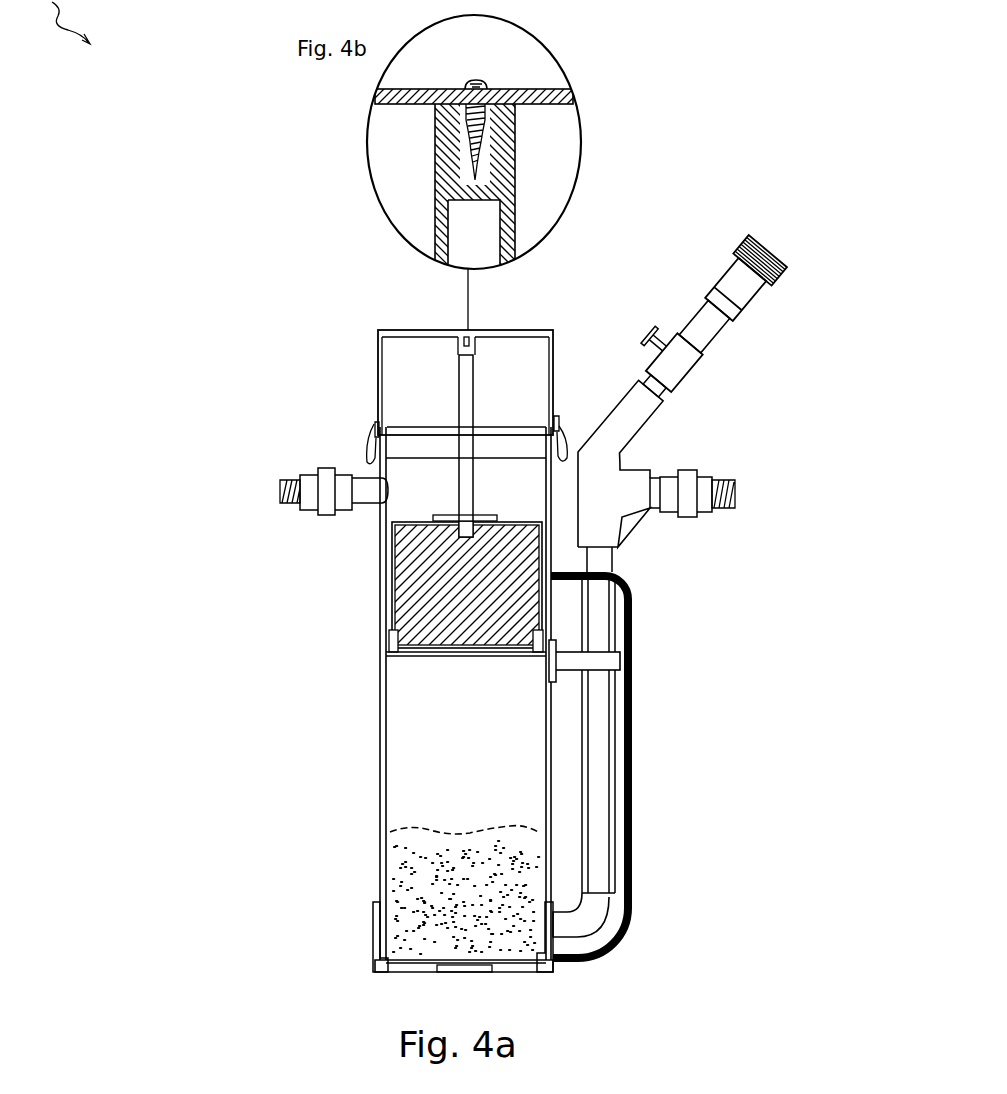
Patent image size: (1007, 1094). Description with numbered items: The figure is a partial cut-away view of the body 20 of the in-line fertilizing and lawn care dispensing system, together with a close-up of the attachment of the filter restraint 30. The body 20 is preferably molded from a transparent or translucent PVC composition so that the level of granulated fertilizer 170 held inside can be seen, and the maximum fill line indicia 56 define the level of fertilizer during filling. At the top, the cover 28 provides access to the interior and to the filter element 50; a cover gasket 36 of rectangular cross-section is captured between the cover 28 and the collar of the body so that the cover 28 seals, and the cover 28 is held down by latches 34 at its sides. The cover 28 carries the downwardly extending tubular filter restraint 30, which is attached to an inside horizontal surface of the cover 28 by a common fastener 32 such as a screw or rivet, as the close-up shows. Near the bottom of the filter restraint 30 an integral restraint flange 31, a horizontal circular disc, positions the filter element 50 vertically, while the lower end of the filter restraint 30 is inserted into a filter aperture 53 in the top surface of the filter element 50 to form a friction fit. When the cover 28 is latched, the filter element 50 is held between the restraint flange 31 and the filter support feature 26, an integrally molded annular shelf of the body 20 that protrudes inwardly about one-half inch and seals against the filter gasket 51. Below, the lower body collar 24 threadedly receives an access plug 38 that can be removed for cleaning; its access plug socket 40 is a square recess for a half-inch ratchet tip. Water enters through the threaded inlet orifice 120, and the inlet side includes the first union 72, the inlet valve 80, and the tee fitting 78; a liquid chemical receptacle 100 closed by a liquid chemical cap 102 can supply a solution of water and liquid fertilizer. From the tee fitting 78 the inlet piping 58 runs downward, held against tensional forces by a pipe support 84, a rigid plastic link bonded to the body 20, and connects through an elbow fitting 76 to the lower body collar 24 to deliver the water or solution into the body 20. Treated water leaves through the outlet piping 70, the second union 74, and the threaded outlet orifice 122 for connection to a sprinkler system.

In FIG. 4A, the body 20 is at (379, 738).
In FIG. 4A, the lower body collar 24 is at (374, 960).
In FIG. 4A, the filter support feature 26 is at (392, 655).
In FIG. 4A, the cover 28 is at (388, 330).
In FIG. 4B, the cover 28 is at (563, 100).
In FIG. 4A, the filter restraint 30 is at (477, 367).
In FIG. 4B, the filter restraint 30 is at (433, 152).
In FIG. 4A, the restraint flange 31 is at (478, 513).
In FIG. 4A, the fastener 32 is at (465, 330).
In FIG. 4B, the fastener 32 is at (487, 82).
In FIG. 4A, the clamp 34 is at (376, 425).
In FIG. 4A, the cover gasket 36 is at (368, 428).
In FIG. 4A, the access plug 38 is at (502, 973).
In FIG. 4A, the access plug socket 40 is at (467, 968).
In FIG. 4A, the filter element 50 is at (430, 597).
In FIG. 4A, the filter gasket 51 is at (528, 645).
In FIG. 4A, the filter aperture 53 is at (455, 527).
In FIG. 4A, the maximum fill line indicia 56 is at (633, 812).
In FIG. 4A, the inlet piping 58 is at (713, 335).
In FIG. 4A, the outlet piping 70 is at (363, 488).
In FIG. 4A, the first union 72 is at (687, 513).
In FIG. 4A, the second union 74 is at (317, 513).
In FIG. 4A, the elbow fitting 76 is at (603, 925).
In FIG. 4A, the tee fitting 78 is at (623, 517).
In FIG. 4A, the inlet valve 80 is at (658, 355).
In FIG. 4A, the pipe support 84 is at (618, 662).
In FIG. 4A, the liquid chemical receptacle 100 is at (753, 302).
In FIG. 4A, the liquid chemical cap 102 is at (787, 272).
In FIG. 4A, the inlet orifice 120 is at (727, 508).
In FIG. 4A, the outlet orifice 122 is at (280, 480).
In FIG. 4A, the granulated fertilizer 170 is at (423, 843).